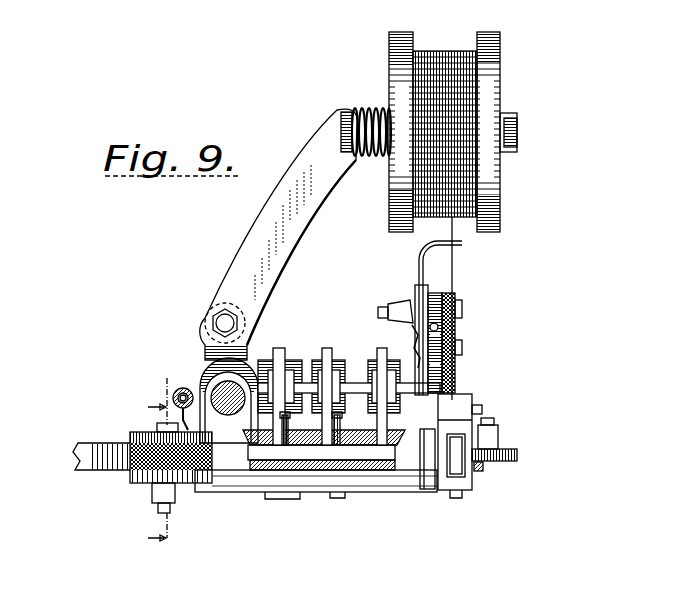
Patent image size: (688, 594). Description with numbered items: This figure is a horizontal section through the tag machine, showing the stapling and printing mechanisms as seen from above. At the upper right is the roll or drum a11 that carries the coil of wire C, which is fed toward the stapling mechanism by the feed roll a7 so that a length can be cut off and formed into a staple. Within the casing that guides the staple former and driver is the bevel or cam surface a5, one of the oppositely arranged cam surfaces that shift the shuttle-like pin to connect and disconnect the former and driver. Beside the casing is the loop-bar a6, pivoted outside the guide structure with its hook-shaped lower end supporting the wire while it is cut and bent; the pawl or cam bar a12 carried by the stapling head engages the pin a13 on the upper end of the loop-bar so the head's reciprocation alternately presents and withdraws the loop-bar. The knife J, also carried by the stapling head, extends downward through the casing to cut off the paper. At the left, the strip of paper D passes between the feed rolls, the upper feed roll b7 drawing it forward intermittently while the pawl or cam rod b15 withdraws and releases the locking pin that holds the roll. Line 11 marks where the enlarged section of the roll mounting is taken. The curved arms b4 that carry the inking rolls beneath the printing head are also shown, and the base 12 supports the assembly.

The roll or drum a11 is at (550, 60).
The wire C is at (457, 278).
The feed roll a7 is at (462, 367).
The arms b4 is at (380, 348).
The cam surface a5 is at (304, 362).
The pawl or cam rod b15 is at (185, 426).
The section line 11— 11 is at (178, 375).
The strip of paper D is at (100, 456).
The feed roll b7 is at (135, 472).
The base plate 12 is at (222, 497).
The knife J is at (433, 470).
The loop-bar a6 is at (514, 452).
The pin a13 is at (484, 468).
The pawl or cam bar a12 is at (480, 471).